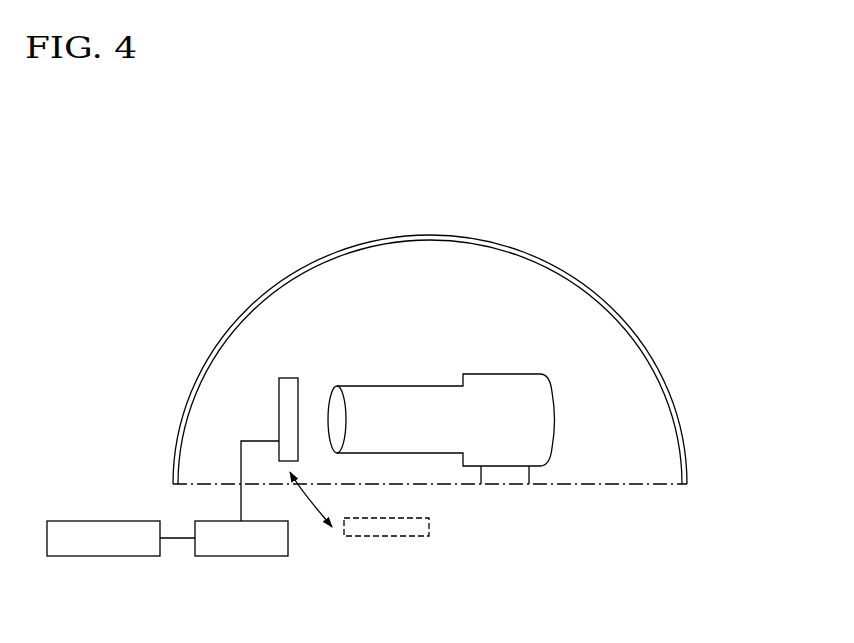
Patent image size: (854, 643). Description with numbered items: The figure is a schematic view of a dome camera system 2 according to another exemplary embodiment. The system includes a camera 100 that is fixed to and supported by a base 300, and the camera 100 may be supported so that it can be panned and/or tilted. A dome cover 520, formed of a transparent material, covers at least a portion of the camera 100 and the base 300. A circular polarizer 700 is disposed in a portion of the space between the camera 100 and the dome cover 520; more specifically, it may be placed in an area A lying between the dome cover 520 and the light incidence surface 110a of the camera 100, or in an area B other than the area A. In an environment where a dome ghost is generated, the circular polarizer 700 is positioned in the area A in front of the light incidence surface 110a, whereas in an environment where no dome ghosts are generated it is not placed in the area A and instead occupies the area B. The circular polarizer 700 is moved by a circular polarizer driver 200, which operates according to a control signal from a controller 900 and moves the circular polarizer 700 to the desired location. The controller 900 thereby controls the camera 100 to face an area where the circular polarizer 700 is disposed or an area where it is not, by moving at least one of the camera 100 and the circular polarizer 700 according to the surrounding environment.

The dome camera system 2 is at (702, 221).
The camera 100 is at (408, 385).
The light incidence surface 110a is at (337, 397).
The circular polarizer driver 200 is at (241, 556).
The base 300 is at (532, 468).
The dome cover 520 is at (599, 295).
The circular polarizer 700 is at (288, 377).
The controller 900 is at (104, 556).
The area A is at (268, 407).
The area B is at (407, 545).